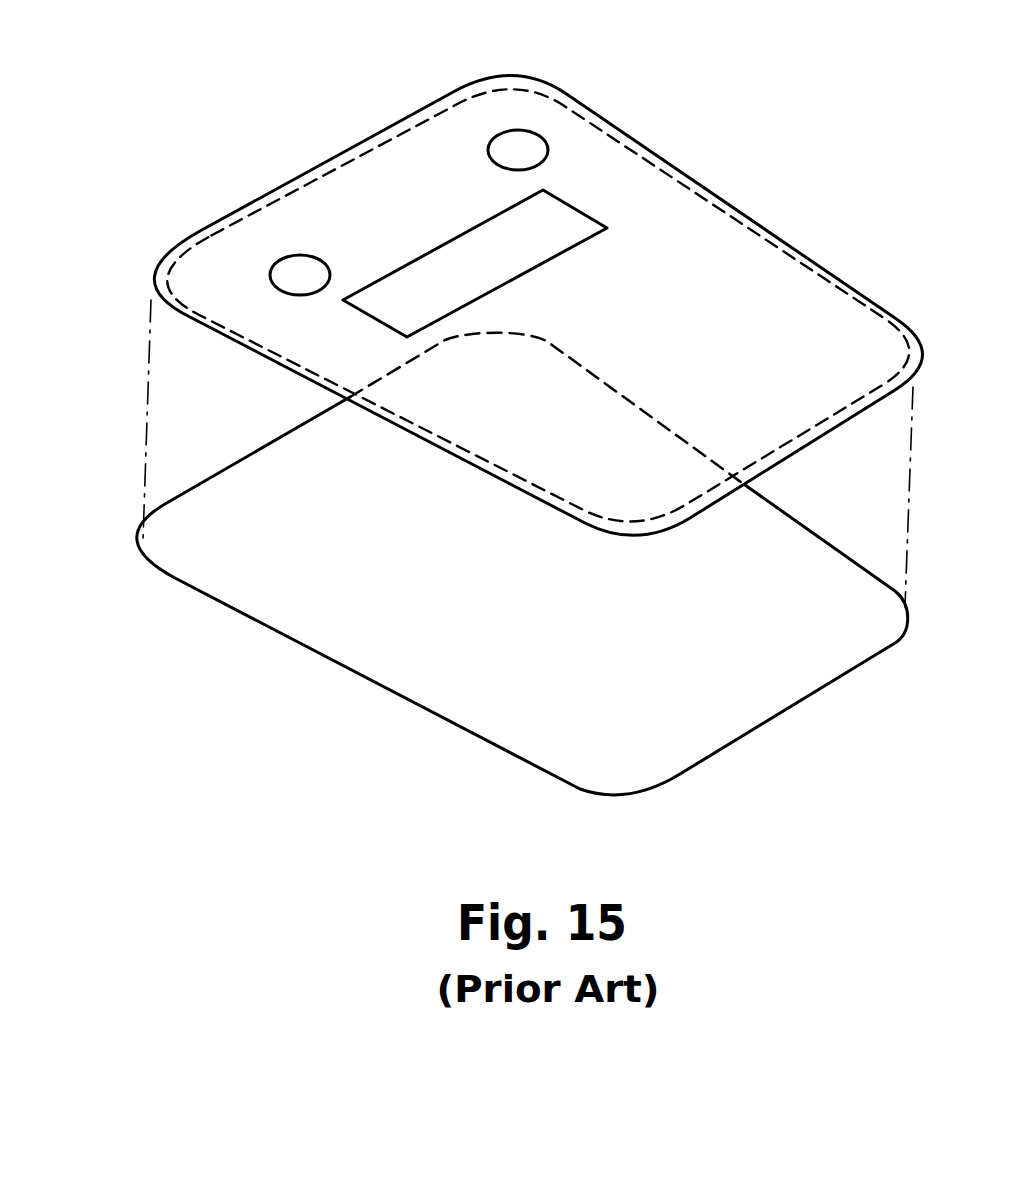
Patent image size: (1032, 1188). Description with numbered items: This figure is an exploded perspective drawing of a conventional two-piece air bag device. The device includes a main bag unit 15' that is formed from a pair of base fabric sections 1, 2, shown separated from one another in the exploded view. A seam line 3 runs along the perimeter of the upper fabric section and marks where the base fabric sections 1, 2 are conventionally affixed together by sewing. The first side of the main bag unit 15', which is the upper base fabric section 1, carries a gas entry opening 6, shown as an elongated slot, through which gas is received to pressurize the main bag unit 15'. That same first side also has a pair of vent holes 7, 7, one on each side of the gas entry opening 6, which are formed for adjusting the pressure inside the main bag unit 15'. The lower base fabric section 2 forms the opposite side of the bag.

The base fabric section 1 is at (232, 340).
The base fabric section 2 is at (248, 616).
The seam line 3 is at (258, 205).
The gas entry opening 6 is at (461, 249).
The vent hole 7 is at (272, 262).
The main bag unit 15' is at (489, 400).